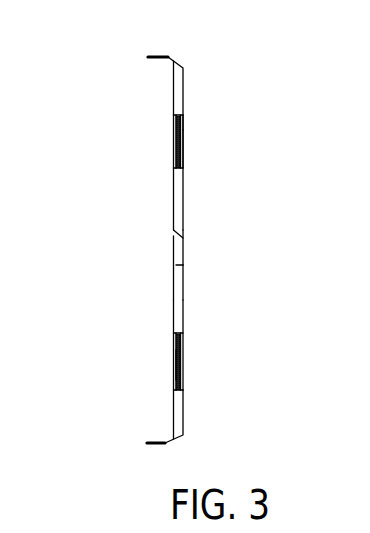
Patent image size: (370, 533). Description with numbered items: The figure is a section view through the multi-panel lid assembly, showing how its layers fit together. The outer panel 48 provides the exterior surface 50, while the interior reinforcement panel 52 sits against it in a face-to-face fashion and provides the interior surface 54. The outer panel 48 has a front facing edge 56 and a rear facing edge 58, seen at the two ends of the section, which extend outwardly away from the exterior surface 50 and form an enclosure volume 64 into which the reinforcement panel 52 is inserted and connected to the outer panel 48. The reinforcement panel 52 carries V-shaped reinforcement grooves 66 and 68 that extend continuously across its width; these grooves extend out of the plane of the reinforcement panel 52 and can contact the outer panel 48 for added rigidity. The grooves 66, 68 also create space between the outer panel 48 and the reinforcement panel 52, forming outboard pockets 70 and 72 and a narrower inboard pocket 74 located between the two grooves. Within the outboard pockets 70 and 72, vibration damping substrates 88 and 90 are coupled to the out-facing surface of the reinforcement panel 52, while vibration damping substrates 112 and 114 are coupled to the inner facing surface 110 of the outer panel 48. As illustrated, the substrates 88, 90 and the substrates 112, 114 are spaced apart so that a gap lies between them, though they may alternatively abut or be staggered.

The outer panel 48 is at (184, 193).
The exterior surface 50 is at (184, 238).
The interior reinforcement panel 52 is at (172, 320).
The interior surface 54 is at (173, 186).
The front facing edge 56 is at (166, 446).
The rear facing edge 58 is at (166, 56).
The enclosure volume 64 is at (170, 94).
The V-shaped reinforcement groove 66 is at (180, 226).
The V-shaped reinforcement groove 68 is at (181, 288).
The outboard pocket 70 is at (184, 82).
The outboard pocket 72 is at (184, 410).
The inboard pocket 74 is at (184, 267).
The vibration damping substrate 88 is at (173, 135).
The vibration damping substrate 90 is at (173, 362).
The inner facing surface 110 is at (180, 265).
The vibration damping substrate 112 is at (183, 135).
The vibration damping substrate 114 is at (183, 354).